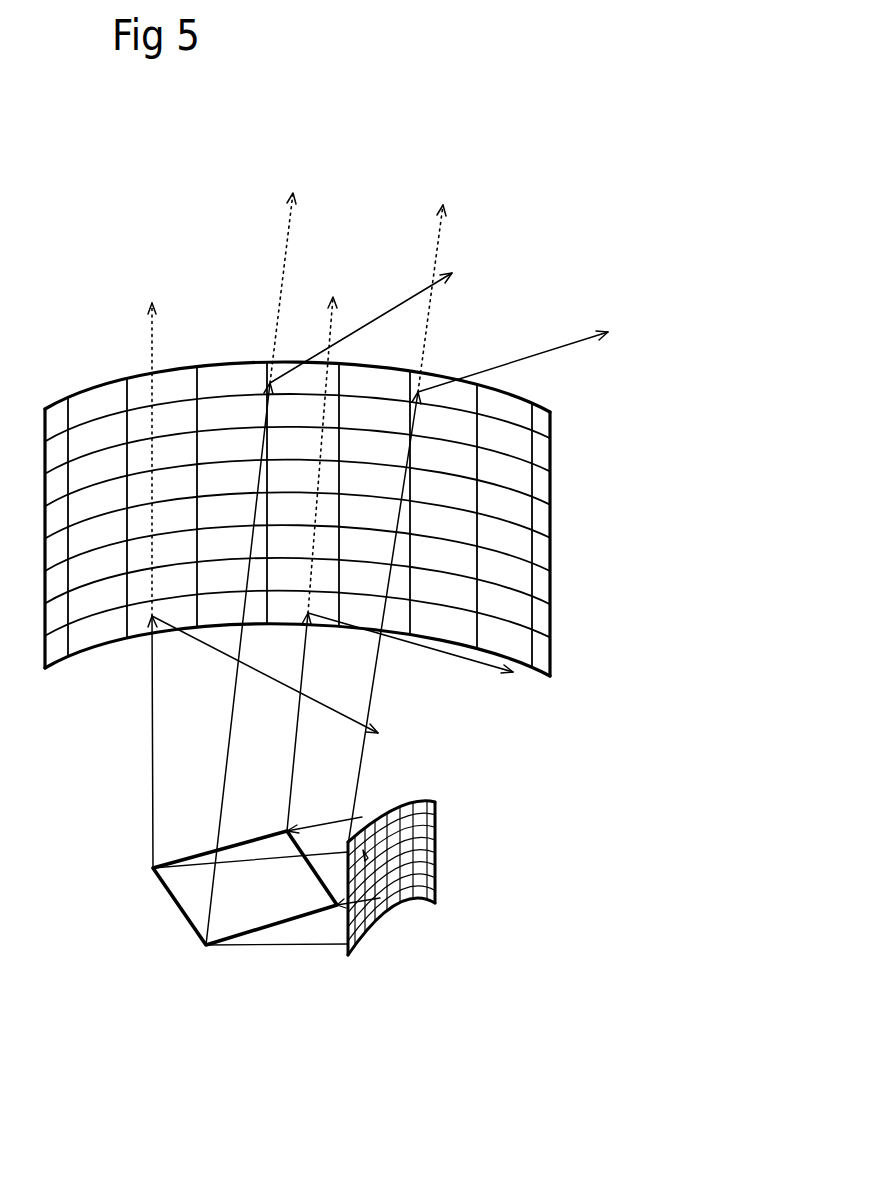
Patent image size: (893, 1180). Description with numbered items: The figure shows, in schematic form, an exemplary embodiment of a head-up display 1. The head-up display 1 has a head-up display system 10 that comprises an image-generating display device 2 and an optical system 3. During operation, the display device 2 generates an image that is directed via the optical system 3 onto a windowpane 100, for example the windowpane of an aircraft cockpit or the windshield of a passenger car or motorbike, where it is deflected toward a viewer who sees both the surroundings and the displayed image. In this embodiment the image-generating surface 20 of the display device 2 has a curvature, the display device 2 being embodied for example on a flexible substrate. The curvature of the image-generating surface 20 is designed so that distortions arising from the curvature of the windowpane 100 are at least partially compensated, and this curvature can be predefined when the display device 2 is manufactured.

The head-up display 1 is at (694, 143).
The windowpane 100 is at (553, 418).
The optical system 3 is at (173, 906).
The head-up display system 10 is at (451, 970).
The image-generating display device 2 is at (369, 927).
The image-generating surface 20 is at (366, 857).